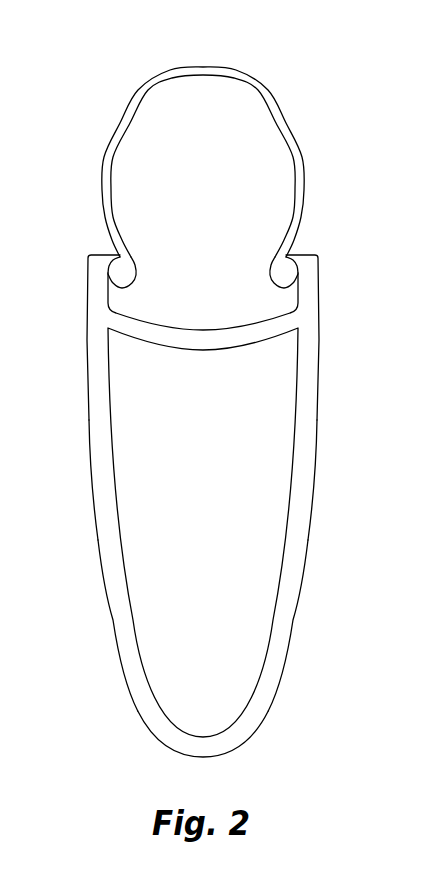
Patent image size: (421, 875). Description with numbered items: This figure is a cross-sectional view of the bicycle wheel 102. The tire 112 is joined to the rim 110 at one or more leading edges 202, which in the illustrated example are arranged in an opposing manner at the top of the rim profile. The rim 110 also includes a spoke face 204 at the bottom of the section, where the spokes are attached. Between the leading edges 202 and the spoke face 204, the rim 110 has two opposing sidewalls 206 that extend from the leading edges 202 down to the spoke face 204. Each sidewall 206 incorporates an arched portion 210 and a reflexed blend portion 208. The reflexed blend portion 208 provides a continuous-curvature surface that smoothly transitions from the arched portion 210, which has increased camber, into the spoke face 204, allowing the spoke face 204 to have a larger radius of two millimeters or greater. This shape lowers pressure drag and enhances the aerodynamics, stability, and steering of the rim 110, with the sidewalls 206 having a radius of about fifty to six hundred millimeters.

The wheel 102 is at (97, 56).
The tire 112 is at (268, 95).
The leading edges 202 is at (92, 257).
The arched portion 210 is at (318, 402).
The sidewalls 206 is at (310, 505).
The reflexed blend portion 208 is at (289, 645).
The spoke face 204 is at (260, 728).
The rim 110 is at (107, 487).